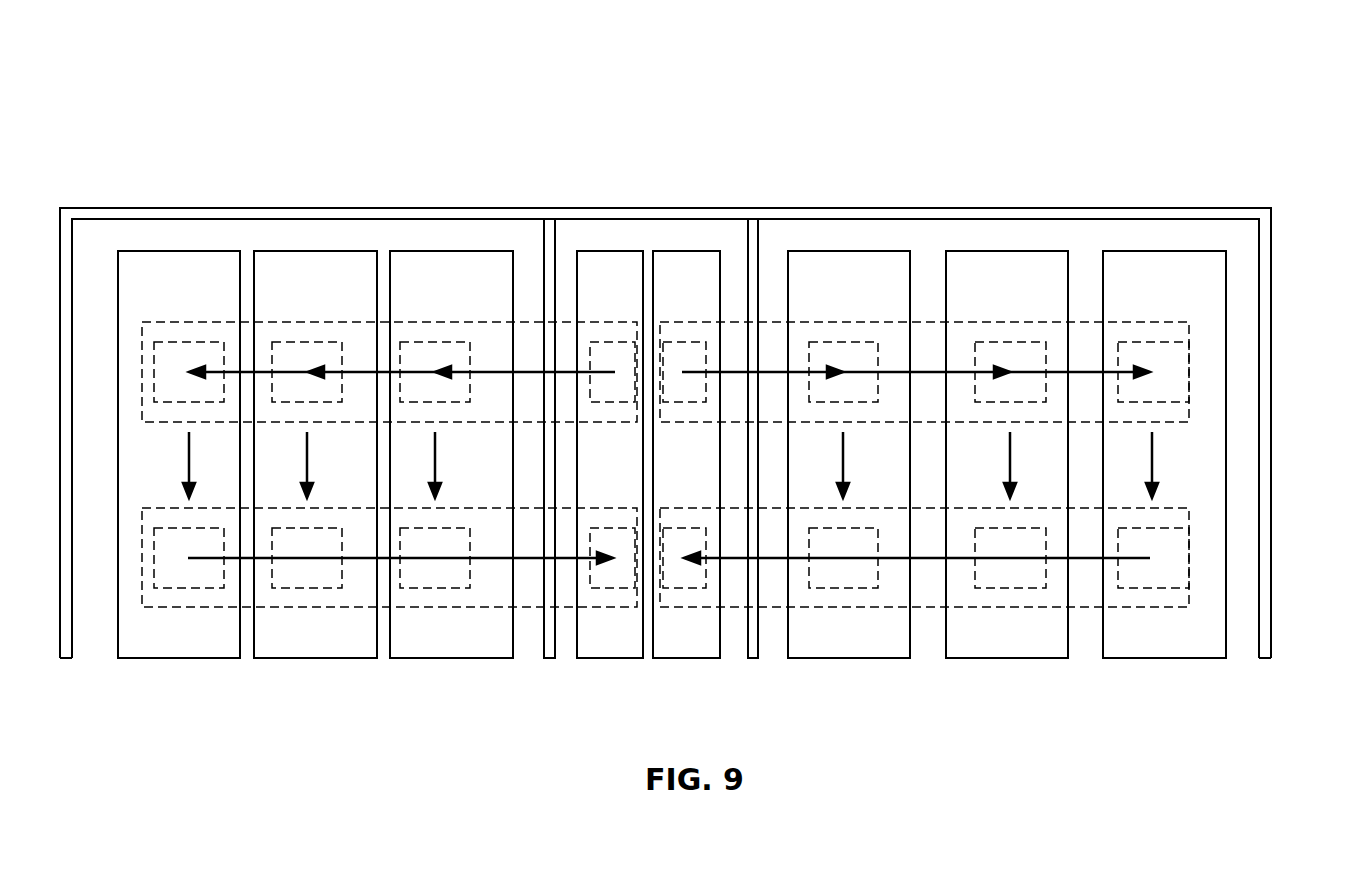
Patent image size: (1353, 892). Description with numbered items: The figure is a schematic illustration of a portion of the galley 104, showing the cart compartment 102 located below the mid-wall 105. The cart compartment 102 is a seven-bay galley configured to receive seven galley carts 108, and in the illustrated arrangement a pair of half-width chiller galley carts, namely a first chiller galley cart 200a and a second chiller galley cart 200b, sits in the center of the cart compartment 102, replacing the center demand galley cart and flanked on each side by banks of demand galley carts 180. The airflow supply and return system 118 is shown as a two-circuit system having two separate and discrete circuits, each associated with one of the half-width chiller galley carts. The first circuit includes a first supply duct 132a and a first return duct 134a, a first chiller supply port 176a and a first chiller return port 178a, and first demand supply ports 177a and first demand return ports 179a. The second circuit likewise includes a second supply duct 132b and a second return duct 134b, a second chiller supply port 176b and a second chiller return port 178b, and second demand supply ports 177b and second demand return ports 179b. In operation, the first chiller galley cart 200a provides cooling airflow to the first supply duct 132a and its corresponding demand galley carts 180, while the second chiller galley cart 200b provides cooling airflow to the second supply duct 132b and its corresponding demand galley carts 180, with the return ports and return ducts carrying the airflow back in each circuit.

The cart compartment 102 is at (1090, 240).
The galley 104 is at (702, 375).
The mid-wall 105 is at (958, 208).
The galley cart 108 is at (178, 645).
The airflow supply and return system 118 is at (772, 316).
The first supply duct 132a is at (537, 335).
The second supply duct 132b is at (928, 322).
The first return duct 134a is at (530, 593).
The second return duct 134b is at (932, 597).
The first chiller supply port 176a is at (615, 340).
The second chiller supply port 176b is at (684, 340).
The first demand supply ports 177a is at (418, 340).
The second demand supply ports 177b is at (843, 340).
The first chiller return port 178a is at (612, 580).
The second chiller return port 178b is at (680, 580).
The first demand return ports 179a is at (434, 575).
The second demand return ports 179b is at (844, 575).
The demand galley cart 180 is at (179, 251).
The first chiller galley cart 200a is at (612, 250).
The second chiller galley cart 200b is at (688, 250).